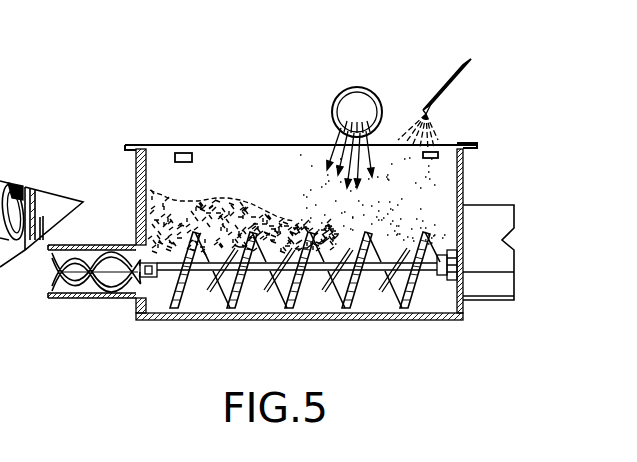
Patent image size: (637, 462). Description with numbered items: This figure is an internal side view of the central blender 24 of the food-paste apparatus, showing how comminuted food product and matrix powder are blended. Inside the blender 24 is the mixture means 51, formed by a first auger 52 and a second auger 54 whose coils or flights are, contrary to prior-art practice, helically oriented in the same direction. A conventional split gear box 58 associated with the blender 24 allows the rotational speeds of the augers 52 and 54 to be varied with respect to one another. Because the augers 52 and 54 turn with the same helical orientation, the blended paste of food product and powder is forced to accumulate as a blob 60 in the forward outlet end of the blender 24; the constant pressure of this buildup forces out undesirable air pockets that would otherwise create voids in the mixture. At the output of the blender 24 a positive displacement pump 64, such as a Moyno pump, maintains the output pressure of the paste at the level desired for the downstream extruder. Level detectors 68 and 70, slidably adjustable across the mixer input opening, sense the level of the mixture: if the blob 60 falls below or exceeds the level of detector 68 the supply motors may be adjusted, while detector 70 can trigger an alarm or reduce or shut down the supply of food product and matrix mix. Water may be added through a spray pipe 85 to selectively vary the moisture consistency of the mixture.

The blender 24 is at (263, 137).
The mixture means 51 is at (386, 164).
The first auger 52 is at (212, 292).
The second auger 54 is at (288, 302).
The split gear box 58 is at (493, 280).
The blob 60 is at (158, 170).
The positive displacement pump 64 is at (90, 275).
The level detector 68 is at (189, 152).
The level detector 70 is at (436, 151).
The spray pipe 85 is at (437, 84).